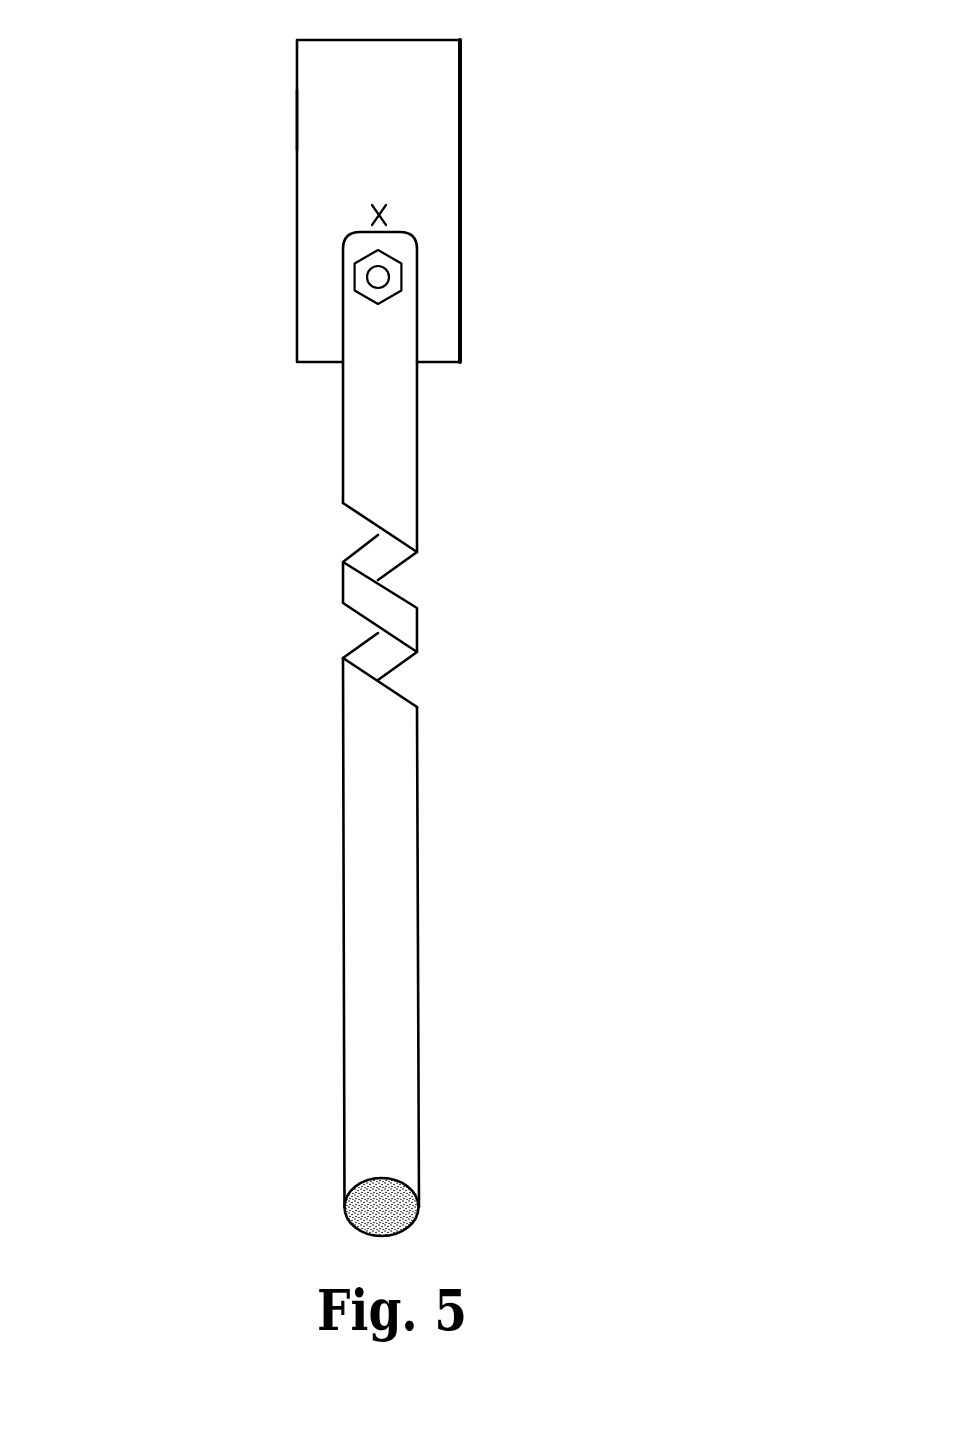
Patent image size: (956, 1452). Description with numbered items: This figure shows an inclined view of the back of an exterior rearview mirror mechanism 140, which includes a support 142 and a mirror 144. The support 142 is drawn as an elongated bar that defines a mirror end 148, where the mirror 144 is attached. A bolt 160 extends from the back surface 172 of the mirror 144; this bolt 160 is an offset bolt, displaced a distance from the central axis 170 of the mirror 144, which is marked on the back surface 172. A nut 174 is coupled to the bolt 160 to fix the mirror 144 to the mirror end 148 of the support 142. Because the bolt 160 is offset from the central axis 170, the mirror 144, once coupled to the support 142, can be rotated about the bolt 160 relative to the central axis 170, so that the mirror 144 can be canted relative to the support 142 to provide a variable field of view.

The exterior rearview mirror mechanism 140 is at (323, 729).
The support 142 is at (420, 908).
The mirror 144 is at (437, 57).
The mirror end 148 is at (357, 254).
The bolt 160 is at (382, 277).
The central axis 170 is at (412, 208).
The back surface 172 is at (322, 135).
The nut 174 is at (379, 297).